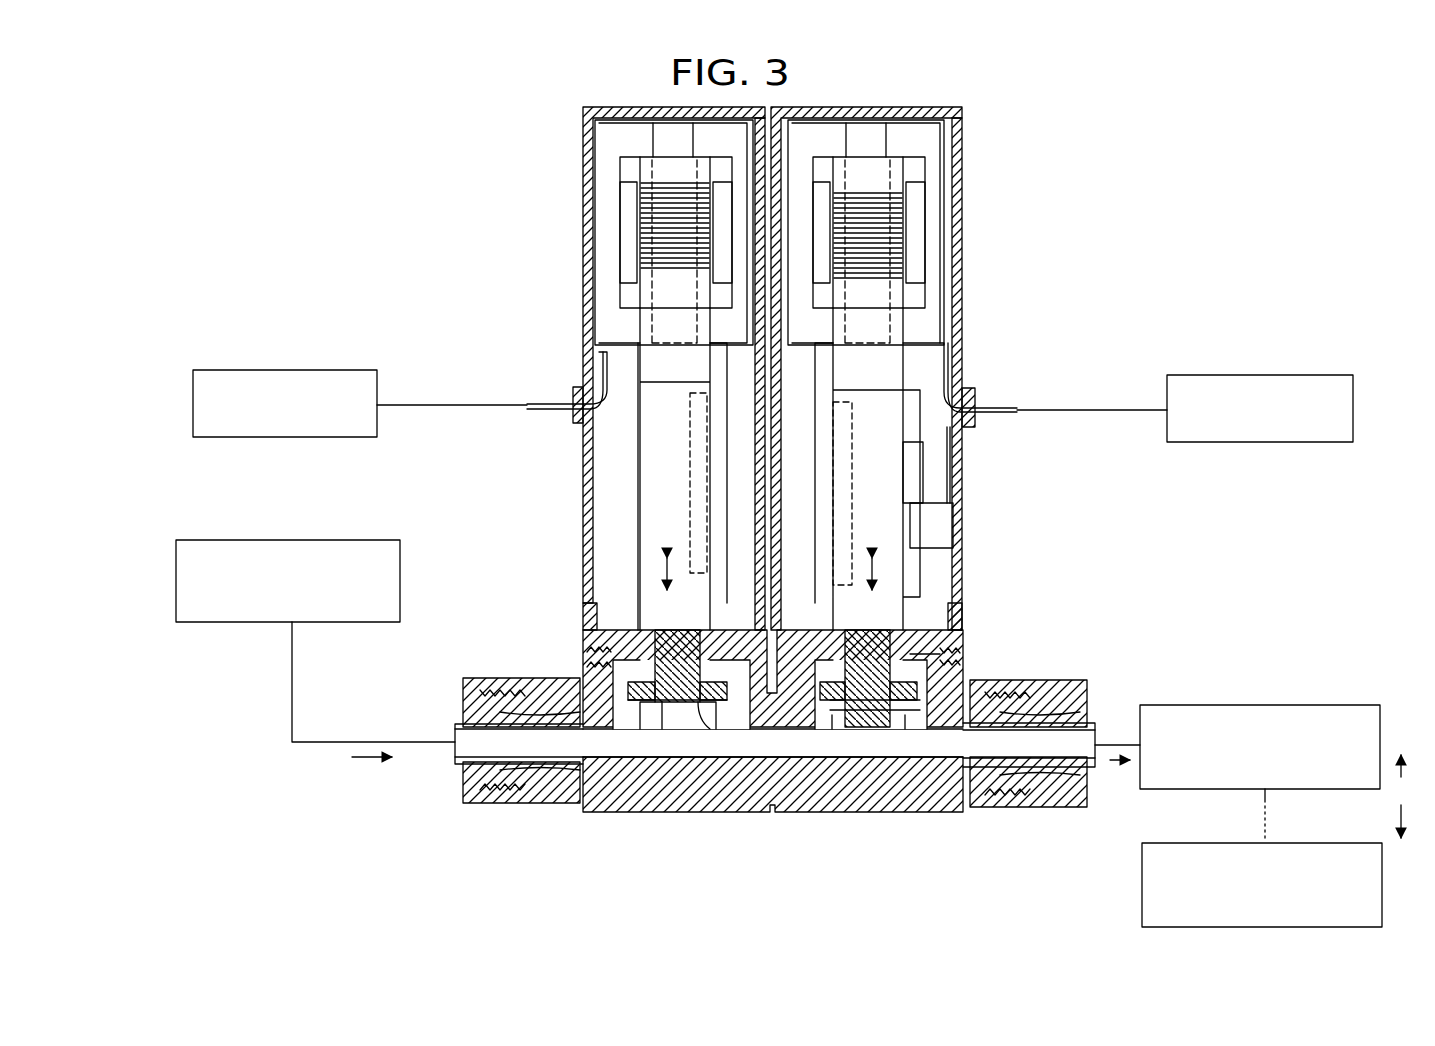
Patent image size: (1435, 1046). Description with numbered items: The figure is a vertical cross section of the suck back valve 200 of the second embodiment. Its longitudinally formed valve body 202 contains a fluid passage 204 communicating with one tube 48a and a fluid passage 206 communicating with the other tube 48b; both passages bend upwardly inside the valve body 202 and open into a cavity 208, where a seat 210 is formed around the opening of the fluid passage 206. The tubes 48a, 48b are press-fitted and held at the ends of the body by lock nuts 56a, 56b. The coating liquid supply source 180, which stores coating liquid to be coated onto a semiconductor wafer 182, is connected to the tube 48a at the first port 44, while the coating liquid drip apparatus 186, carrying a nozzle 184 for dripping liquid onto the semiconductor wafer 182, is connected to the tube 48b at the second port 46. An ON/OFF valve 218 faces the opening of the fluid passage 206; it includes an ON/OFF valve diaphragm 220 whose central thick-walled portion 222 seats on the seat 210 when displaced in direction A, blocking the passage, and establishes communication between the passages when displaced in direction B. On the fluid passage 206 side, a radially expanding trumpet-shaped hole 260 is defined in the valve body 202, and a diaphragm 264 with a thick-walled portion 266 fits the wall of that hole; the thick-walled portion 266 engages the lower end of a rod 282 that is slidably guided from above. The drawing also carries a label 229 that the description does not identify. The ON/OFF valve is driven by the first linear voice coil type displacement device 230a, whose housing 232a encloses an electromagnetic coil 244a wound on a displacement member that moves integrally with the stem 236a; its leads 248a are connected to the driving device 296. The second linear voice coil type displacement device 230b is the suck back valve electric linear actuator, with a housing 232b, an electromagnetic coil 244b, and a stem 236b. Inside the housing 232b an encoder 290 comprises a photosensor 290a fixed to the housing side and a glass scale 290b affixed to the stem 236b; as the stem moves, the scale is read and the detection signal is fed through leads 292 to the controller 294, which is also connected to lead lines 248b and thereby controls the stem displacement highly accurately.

The suck back valve 200 is at (1070, 96).
The ON/OFF valve 218 is at (576, 96).
The first linear voice coil type displacement device 230a is at (583, 148).
The second linear voice coil type displacement device 230b is at (964, 148).
The housing 232a is at (592, 190).
The housing 232b is at (955, 190).
The electromagnetic coil 244a is at (662, 233).
The electromagnetic coil 244b is at (866, 255).
The leads 248a is at (590, 357).
The lead lines 248b is at (965, 368).
The driving device 296 is at (340, 370).
The controller 294 is at (1307, 373).
The coating liquid supply source 180 is at (295, 540).
The stem 236a is at (662, 470).
The stem 236b is at (872, 425).
The leads 292 is at (950, 447).
The encoder 290 is at (1092, 490).
The photosensor 290a is at (953, 522).
The glass scale 290b is at (924, 495).
The valve chamber 229 is at (648, 640).
The fluid passage 204 is at (575, 780).
The fluid passage 206 is at (930, 730).
The valve body 202 is at (788, 796).
The ON/OFF valve diaphragm 220 is at (645, 708).
The seat 210 is at (652, 712).
The thick-walled portion 222 is at (704, 704).
The cavity 208 is at (692, 732).
The trumpet-shaped hole 260 is at (892, 744).
The diaphragm 264 is at (886, 722).
The thick-walled portion 266 is at (874, 727).
The rod 282 is at (888, 632).
The lock nut 56a is at (505, 685).
The lock nut 56b is at (1032, 683).
The first port 44 is at (485, 770).
The second port 46 is at (1035, 780).
The tube 48a is at (455, 722).
The tube 48b is at (1093, 723).
The coating liquid drip apparatus 186 is at (1197, 705).
The nozzle 184 is at (1265, 802).
The semiconductor wafer 182 is at (1142, 865).